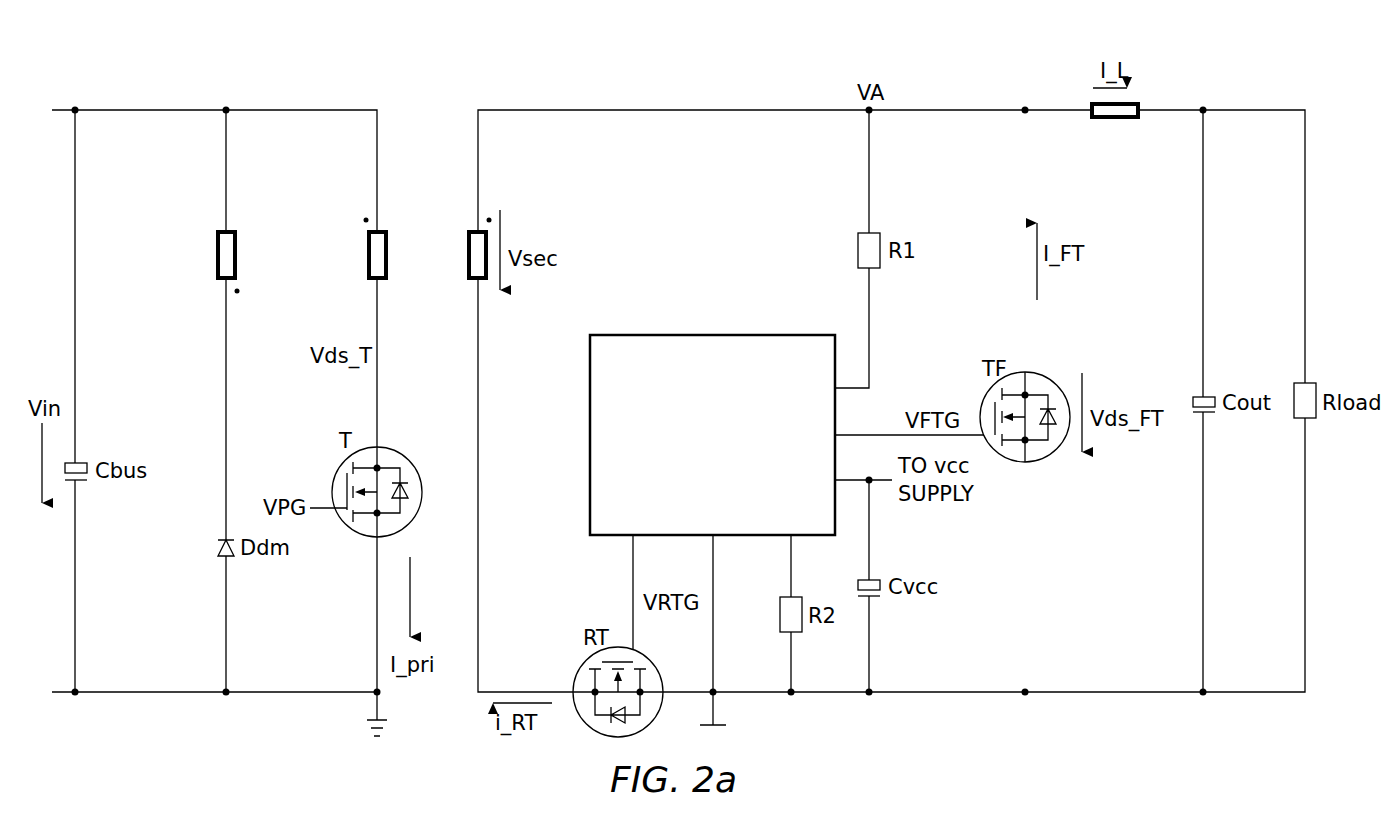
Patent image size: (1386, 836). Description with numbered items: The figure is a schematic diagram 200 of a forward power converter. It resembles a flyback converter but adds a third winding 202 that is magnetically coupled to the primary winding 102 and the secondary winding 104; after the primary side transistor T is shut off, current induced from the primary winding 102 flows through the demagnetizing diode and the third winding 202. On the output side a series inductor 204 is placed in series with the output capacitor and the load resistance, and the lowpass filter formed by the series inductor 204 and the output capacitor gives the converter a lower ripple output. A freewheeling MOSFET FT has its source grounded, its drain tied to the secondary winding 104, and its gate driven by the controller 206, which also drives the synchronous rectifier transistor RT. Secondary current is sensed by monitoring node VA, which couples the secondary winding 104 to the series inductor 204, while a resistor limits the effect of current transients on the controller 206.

The schematic diagram 200 is at (306, 70).
The third winding 202 is at (216, 252).
The primary winding 102 is at (367, 252).
The secondary winding 104 is at (467, 252).
The series inductor 204 is at (1115, 119).
The controller 206 is at (747, 335).